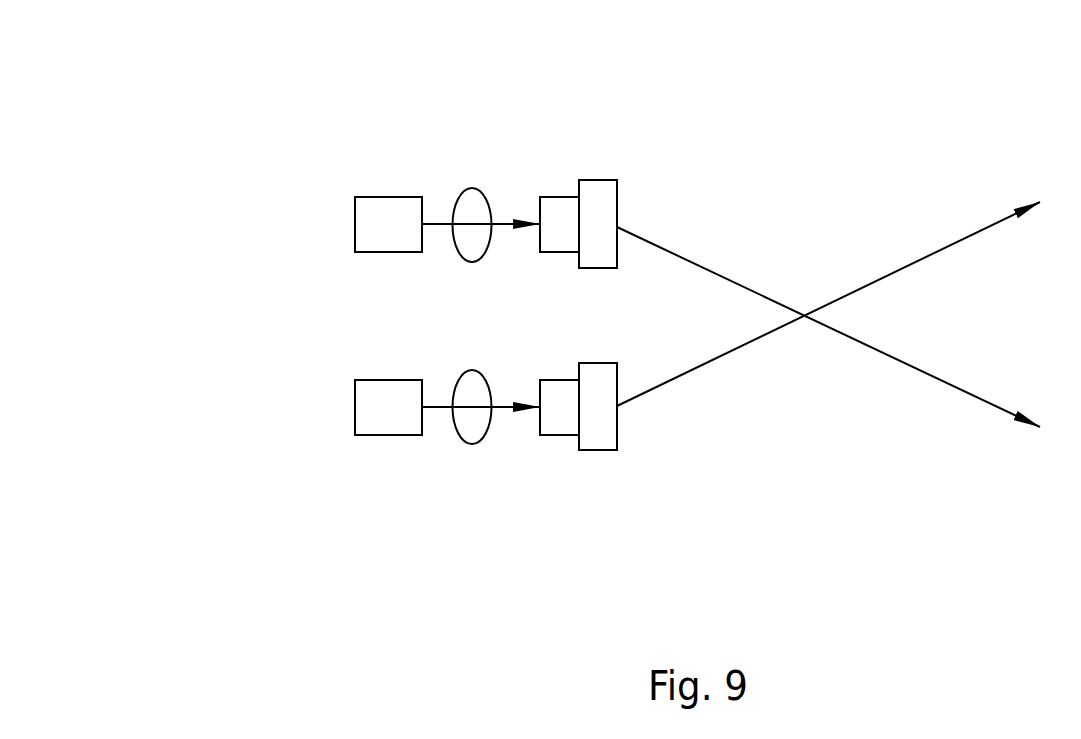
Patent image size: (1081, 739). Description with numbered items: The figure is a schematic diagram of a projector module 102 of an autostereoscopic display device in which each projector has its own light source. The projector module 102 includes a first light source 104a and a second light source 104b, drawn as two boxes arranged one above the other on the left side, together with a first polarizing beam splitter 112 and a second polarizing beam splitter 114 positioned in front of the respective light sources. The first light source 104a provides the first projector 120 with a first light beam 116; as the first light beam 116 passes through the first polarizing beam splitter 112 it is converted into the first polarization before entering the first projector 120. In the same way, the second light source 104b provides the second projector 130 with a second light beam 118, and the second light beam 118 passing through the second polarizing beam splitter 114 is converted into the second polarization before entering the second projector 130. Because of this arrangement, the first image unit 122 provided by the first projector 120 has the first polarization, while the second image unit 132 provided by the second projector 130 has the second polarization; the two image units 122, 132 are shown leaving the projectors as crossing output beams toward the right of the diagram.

The projector module 102 is at (208, 45).
The first light source 104a is at (389, 195).
The second light source 104b is at (389, 435).
The first polarizing beam splitter 112 is at (472, 187).
The second polarizing beam splitter 114 is at (472, 443).
The first light beam 116 is at (502, 222).
The second light beam 118 is at (502, 408).
The first projector 120 is at (598, 180).
The second projector 130 is at (598, 450).
The first image unit 122 is at (997, 410).
The second image unit 132 is at (998, 225).